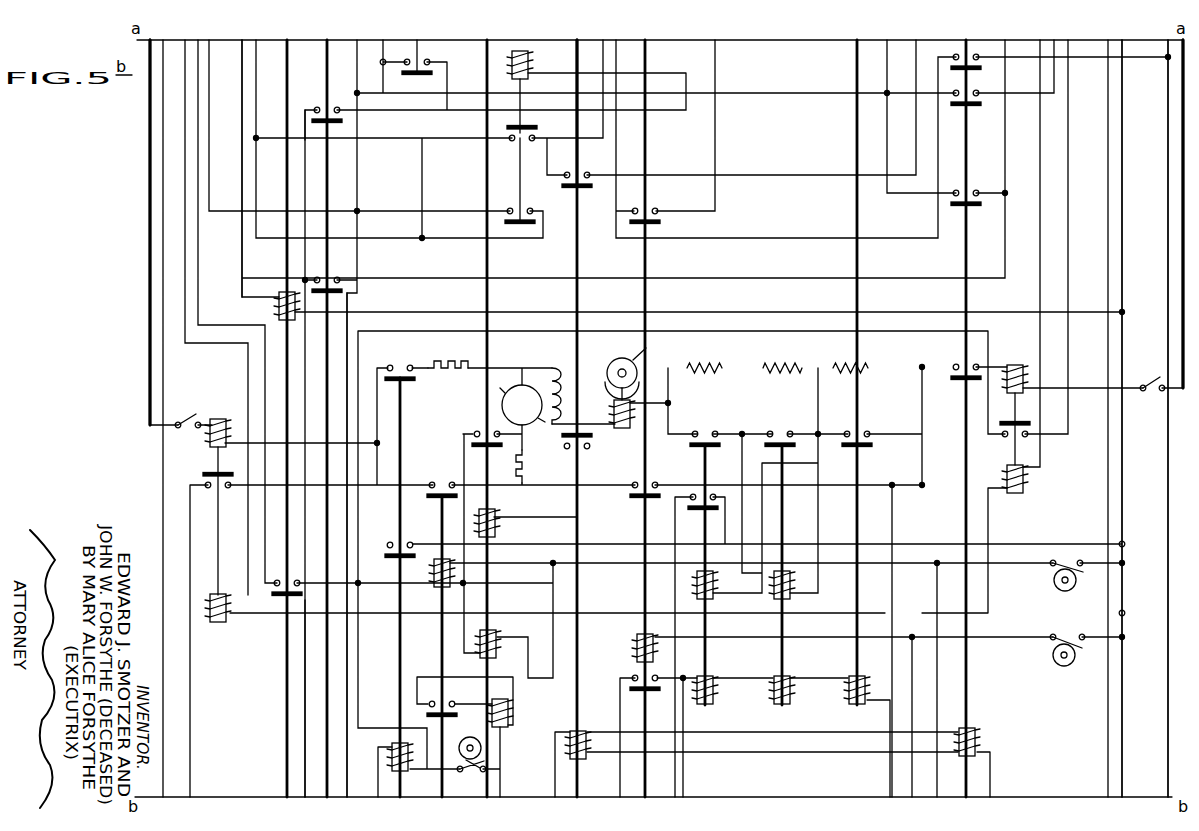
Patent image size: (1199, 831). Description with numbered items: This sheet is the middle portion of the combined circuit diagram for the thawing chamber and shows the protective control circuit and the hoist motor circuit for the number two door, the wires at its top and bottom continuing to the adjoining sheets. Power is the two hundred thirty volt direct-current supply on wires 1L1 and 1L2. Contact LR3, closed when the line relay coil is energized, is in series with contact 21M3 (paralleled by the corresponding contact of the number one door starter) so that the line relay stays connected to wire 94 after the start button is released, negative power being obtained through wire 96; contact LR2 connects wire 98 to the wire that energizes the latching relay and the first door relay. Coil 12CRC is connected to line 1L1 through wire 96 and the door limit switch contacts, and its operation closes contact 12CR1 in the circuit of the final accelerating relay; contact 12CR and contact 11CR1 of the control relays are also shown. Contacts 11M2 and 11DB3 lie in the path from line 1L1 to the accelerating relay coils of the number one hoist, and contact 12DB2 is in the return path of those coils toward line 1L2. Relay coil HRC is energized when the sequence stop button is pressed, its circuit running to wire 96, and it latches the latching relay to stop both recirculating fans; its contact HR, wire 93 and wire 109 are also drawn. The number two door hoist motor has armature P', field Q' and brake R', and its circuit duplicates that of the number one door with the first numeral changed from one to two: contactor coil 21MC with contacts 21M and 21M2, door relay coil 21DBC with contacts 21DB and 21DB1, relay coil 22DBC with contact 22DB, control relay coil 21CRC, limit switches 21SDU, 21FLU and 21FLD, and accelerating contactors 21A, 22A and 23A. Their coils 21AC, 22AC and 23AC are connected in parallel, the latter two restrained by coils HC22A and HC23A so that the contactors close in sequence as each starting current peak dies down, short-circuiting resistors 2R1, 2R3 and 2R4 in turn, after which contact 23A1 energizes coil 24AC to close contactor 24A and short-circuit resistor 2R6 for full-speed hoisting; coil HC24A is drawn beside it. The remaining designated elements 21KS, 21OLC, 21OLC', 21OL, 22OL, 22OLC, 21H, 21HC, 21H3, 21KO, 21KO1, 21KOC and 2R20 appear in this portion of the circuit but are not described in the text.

The supply wire 1L2 is at (150, 128).
The supply wire 1L1 is at (1183, 125).
The wire 98 is at (306, 115).
The wire 96 is at (1125, 208).
The wire 94 is at (347, 527).
The conductor 93 is at (305, 758).
The conductor 109 is at (242, 249).
The contact LR2 is at (343, 121).
The contact LR3 is at (335, 272).
The control relay 11CR contact 1 11CR1 is at (433, 66).
The relay coil 12CRC is at (530, 60).
The control relay 12CR contact 12CR is at (515, 133).
The contact 12CR1 is at (540, 228).
The contact 12DB2 is at (590, 192).
The contact 11DB3 is at (660, 225).
The contact 11M2 is at (960, 58).
The contact 21M2 is at (955, 100).
The contact 21M3 is at (952, 200).
The motor relay 21M contact 21M is at (956, 362).
The contactor coil 21MC is at (982, 735).
The relay coil HRC is at (274, 304).
The relay HR contact HR is at (285, 598).
The relay 21KO contact 21KO is at (398, 366).
The relay 21KO contact 1 21KO1 is at (413, 546).
The relay 21KO coil 21KOC is at (404, 774).
The resistor 2R20 is at (456, 372).
The contactor 24A is at (474, 428).
The relay coil 24AC is at (520, 632).
The holding coil 24A HC24A is at (515, 508).
The key switch 21KS is at (192, 414).
The overload relay coil 21OL 21OLC is at (599, 457).
The overload relay coil 21OL prime 21OLC' is at (1000, 376).
The overload relay contact 21OL is at (1022, 440).
The overload relay contact 22OL is at (205, 490).
The overload relay coil 22OL 22OLC is at (232, 615).
The relay 21H contact 21H is at (438, 481).
The relay 21H coil 21HC is at (455, 574).
The relay 21H contact 3 21H3 is at (462, 698).
The relay coil 21CRC is at (510, 700).
The limit switch contact 21SDU is at (480, 778).
The relay 21DB contact 21DB is at (643, 484).
The contact 21DB1 is at (660, 682).
The relay coil 21DBC is at (630, 650).
The relay 22DB contact 22DB is at (602, 458).
The relay coil 22DBC is at (590, 765).
The contact 23A1 is at (685, 508).
The contactor 23A is at (704, 427).
The contactor 22A is at (780, 427).
The contactor 21A is at (848, 428).
The relay coil 23AC is at (720, 684).
The relay coil 22AC is at (797, 684).
The relay coil 21AC is at (872, 684).
The restraining coil HC23A is at (716, 590).
The restraining coil HC22A is at (794, 590).
The resistor 2R6 is at (532, 455).
The resistor 2R4 is at (724, 358).
The resistor 2R3 is at (800, 358).
The resistor 2R1 is at (868, 362).
The armature P' is at (522, 405).
The field Q' is at (571, 396).
The brake R' is at (632, 396).
The upper float limit switch 21FLU is at (1052, 570).
The limit switch 21FLD is at (1070, 632).